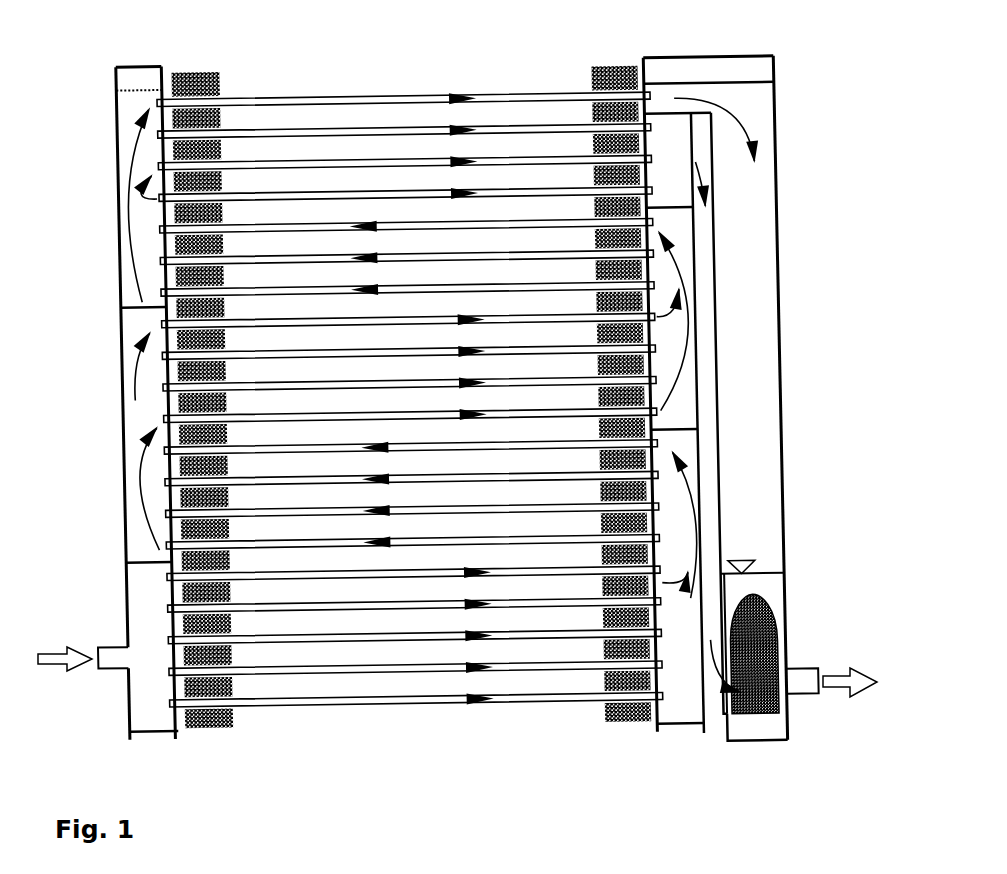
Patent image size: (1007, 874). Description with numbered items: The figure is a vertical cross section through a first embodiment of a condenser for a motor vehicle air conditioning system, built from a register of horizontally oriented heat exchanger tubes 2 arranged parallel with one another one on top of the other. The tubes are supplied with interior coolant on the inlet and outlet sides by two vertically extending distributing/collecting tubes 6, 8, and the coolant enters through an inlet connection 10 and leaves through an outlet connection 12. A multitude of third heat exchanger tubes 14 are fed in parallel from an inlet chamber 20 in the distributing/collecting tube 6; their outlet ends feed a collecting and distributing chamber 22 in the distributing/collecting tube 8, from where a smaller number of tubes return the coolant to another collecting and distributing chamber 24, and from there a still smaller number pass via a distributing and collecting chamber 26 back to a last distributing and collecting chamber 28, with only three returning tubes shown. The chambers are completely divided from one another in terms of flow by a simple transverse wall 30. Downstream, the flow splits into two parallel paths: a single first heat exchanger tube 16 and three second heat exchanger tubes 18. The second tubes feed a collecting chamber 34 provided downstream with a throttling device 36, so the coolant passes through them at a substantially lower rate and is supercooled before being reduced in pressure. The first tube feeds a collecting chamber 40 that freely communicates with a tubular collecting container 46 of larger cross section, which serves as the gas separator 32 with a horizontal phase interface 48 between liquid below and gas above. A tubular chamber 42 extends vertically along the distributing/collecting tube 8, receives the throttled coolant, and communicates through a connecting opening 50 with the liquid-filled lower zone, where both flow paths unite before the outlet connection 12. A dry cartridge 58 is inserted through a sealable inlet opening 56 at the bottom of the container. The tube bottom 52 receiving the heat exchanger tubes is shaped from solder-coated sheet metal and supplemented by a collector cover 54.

The heat exchanger tubes 2 is at (343, 165).
The distributing/collecting tube 6 is at (112, 378).
The distributing/collecting tube 8 is at (680, 740).
The inlet connection 10 is at (115, 655).
The outlet connection 12 is at (802, 682).
The third heat exchanger tube 14 is at (450, 700).
The first heat exchanger tube 16 is at (258, 105).
The second heat exchanger tubes 18 is at (547, 200).
The inlet chamber 20 is at (165, 641).
The collecting and distributing chamber 22 is at (678, 549).
The collecting and distributing chamber 24 is at (168, 498).
The distributing and collecting chamber 26 is at (683, 368).
The distributing and collecting chamber 28 is at (160, 238).
The transverse wall 30 is at (137, 303).
The gas separator 32 is at (768, 528).
The collecting chamber 34 is at (684, 168).
The throttling device 36 is at (692, 160).
The collecting chamber 40 is at (770, 119).
The tubular chamber 42 is at (708, 272).
The collecting container 46 is at (800, 307).
The phase interface 48 is at (768, 573).
The connecting opening 50 is at (722, 737).
The tube bottom 52 is at (178, 682).
The collector cover 54 is at (130, 700).
The inlet opening 56 is at (767, 740).
The dry cartridge 58 is at (763, 640).